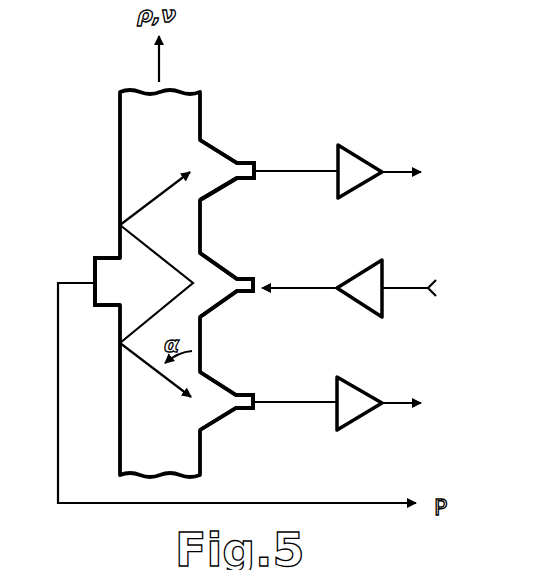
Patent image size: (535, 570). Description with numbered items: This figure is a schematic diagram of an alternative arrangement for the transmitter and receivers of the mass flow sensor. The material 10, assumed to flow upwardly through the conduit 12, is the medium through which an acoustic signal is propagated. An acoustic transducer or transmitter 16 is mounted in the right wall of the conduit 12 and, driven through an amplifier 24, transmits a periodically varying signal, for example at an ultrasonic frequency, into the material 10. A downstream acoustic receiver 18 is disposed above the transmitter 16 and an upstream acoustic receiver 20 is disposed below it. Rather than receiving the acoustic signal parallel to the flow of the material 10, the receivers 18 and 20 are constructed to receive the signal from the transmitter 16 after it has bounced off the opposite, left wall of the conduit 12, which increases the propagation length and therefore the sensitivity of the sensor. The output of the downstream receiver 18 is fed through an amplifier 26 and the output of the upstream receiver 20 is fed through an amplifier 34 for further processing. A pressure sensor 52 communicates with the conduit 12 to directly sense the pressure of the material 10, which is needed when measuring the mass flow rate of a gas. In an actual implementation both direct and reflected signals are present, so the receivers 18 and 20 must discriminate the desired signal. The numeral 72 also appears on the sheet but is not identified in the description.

The material 10 is at (172, 449).
The conduit 12 is at (119, 138).
The transmitter 16 is at (218, 265).
The downstream receiver 18 is at (218, 150).
The upstream receiver 20 is at (217, 383).
The amplifier 24 is at (355, 268).
The amplifier 26 is at (352, 153).
The amplifier 34 is at (352, 383).
The pressure sensor 52 is at (106, 258).
The reference numeral 72 is at (354, 562).